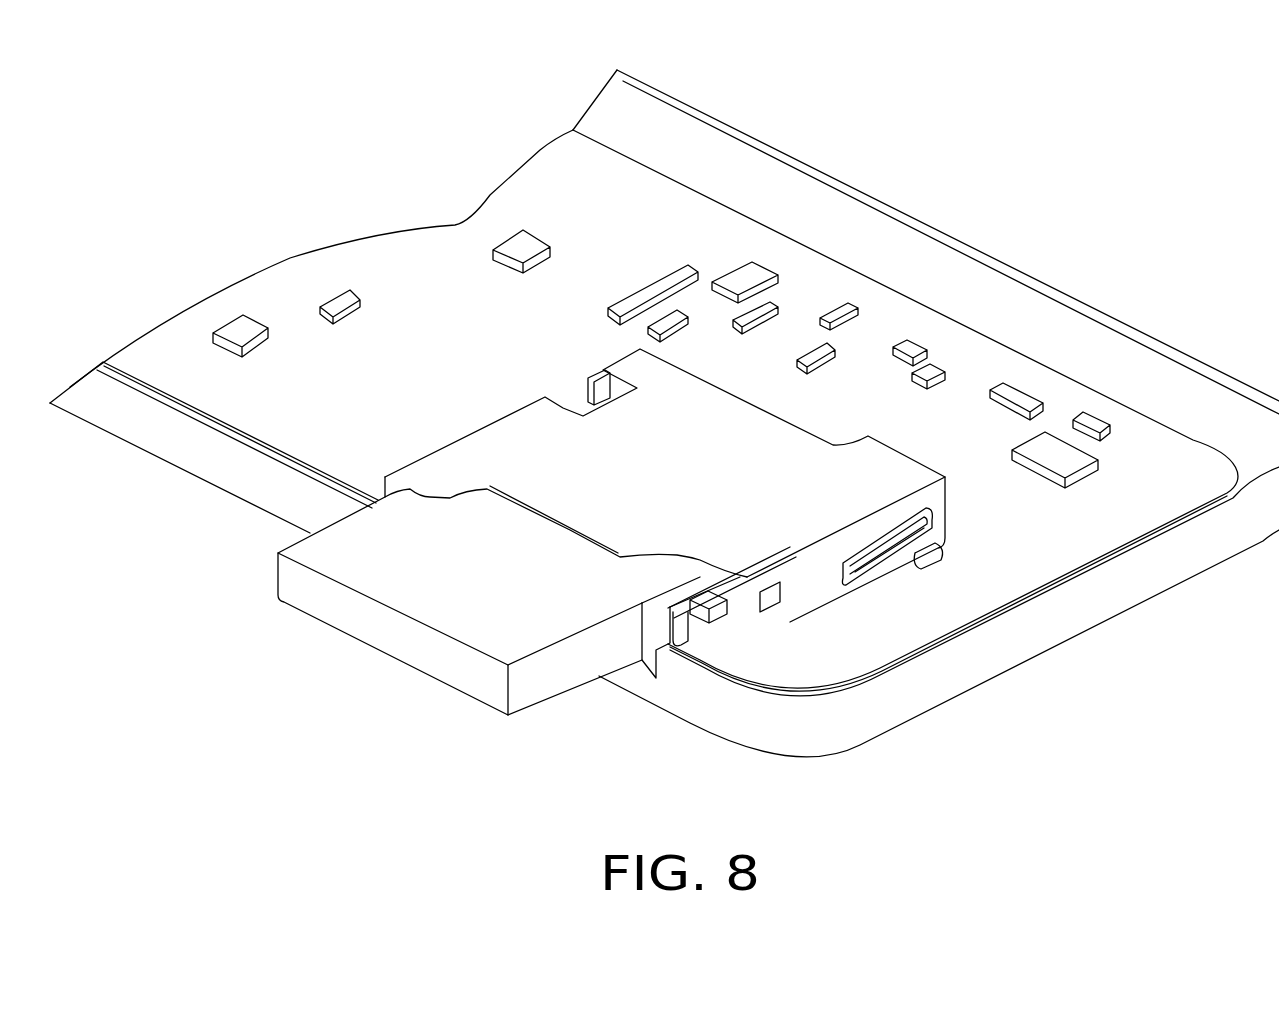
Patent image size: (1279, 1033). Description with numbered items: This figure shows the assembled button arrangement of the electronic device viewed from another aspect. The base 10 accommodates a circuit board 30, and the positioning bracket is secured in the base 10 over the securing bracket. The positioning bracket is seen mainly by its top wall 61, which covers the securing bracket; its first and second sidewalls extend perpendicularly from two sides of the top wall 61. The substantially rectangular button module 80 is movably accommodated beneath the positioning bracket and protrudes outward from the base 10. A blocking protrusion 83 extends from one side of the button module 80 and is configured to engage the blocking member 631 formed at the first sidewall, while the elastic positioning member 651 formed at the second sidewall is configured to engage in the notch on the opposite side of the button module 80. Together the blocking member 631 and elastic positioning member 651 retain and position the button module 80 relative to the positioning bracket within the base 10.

The base 10 is at (945, 273).
The circuit board 30 is at (703, 232).
The top wall 61 is at (537, 437).
The elastic positioning member 651 is at (585, 388).
The button module 80 is at (350, 613).
The blocking member 631 is at (713, 612).
The blocking protrusion 83 is at (770, 600).